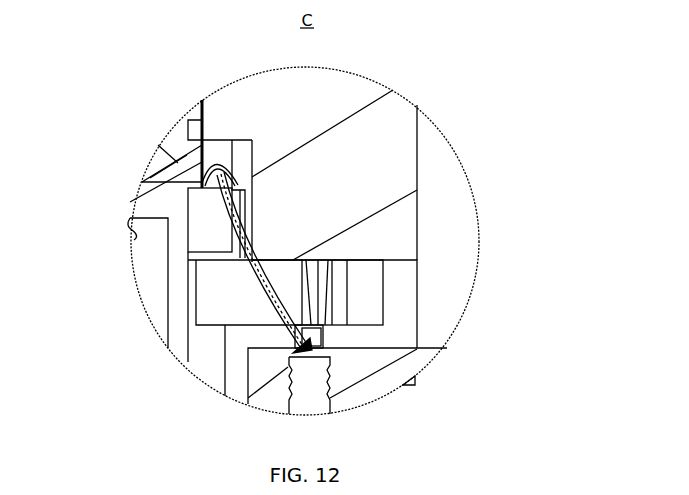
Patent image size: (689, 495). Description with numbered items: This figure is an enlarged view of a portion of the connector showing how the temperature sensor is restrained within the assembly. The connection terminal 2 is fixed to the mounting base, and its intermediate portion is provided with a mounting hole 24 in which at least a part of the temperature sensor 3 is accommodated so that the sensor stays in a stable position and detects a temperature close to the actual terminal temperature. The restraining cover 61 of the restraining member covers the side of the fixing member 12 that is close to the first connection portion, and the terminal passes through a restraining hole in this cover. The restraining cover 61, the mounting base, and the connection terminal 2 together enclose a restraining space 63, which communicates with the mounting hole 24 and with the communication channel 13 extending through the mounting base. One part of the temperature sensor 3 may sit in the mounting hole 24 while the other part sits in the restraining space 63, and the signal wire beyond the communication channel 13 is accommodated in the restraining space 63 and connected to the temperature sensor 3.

The temperature sensor 3 is at (202, 146).
The mounting hole 24 is at (168, 187).
The restraining space 63 is at (186, 234).
The restraining cover 61 is at (400, 224).
The fixing member 12 is at (372, 343).
The connection terminal 2 is at (177, 327).
The communication channel 13 is at (287, 357).